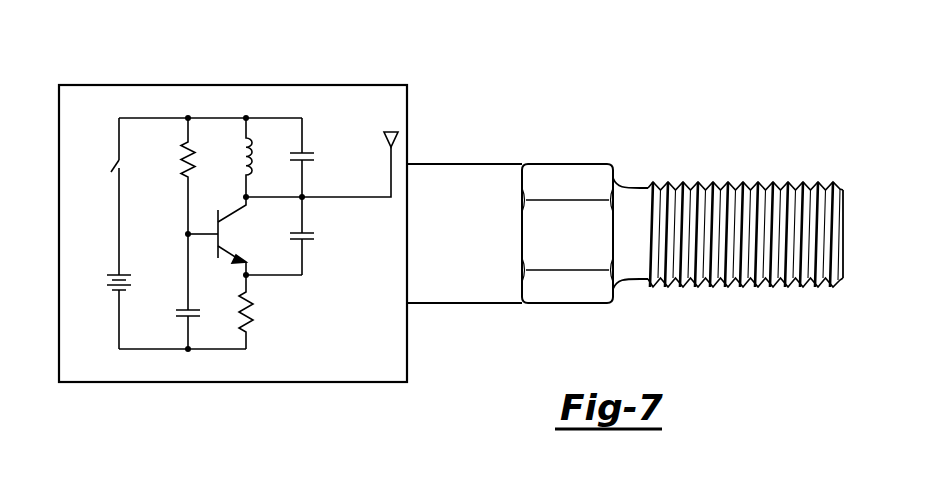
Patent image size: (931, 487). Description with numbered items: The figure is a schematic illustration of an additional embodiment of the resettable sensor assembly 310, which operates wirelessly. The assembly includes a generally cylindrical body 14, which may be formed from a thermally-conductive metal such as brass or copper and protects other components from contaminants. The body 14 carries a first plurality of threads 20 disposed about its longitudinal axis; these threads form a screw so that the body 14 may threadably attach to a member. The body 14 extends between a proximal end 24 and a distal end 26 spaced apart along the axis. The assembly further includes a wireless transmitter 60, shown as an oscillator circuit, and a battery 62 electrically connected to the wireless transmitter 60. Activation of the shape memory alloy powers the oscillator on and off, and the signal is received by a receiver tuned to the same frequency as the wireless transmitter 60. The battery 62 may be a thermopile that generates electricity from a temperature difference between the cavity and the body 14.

The wireless transmitter 60 is at (147, 85).
The resettable sensor assembly 310 is at (668, 100).
The battery 62 is at (467, 164).
The distal end 26 is at (532, 164).
The body 14 is at (582, 178).
The first plurality of threads 20 is at (745, 200).
The proximal end 24 is at (825, 182).